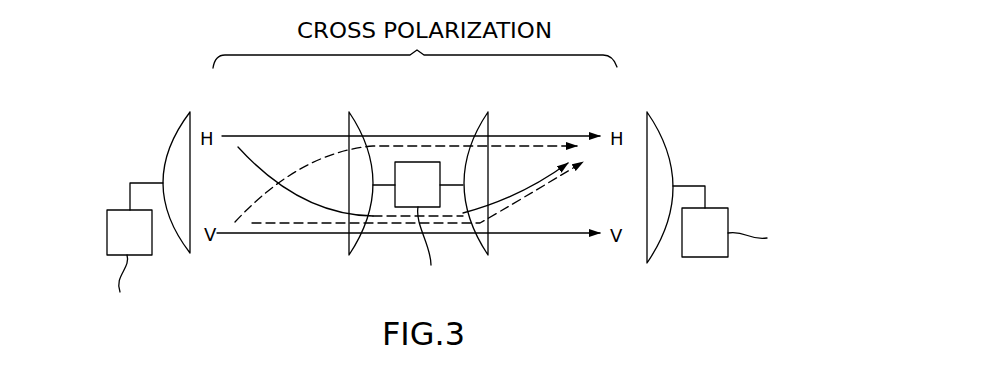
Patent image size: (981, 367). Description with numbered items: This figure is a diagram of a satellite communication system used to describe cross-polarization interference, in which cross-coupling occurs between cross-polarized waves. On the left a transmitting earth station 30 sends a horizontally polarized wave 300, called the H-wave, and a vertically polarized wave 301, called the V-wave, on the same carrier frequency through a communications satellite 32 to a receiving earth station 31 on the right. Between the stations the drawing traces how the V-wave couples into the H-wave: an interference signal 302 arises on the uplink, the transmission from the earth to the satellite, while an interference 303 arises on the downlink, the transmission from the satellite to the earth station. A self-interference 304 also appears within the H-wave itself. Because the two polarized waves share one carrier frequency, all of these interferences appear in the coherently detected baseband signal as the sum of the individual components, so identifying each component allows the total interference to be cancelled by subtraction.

The transmitting earth station 30 is at (107, 230).
The receiving earth station 31 is at (707, 257).
The communications satellite 32 is at (422, 162).
The horizontally polarized wave 300 is at (303, 136).
The vertically polarized wave 301 is at (318, 234).
The interference signal 302 is at (308, 163).
The interference 303 is at (275, 224).
The self-interference 304 is at (297, 193).